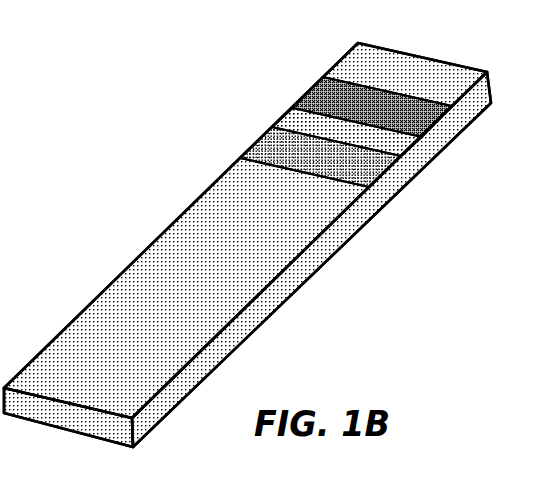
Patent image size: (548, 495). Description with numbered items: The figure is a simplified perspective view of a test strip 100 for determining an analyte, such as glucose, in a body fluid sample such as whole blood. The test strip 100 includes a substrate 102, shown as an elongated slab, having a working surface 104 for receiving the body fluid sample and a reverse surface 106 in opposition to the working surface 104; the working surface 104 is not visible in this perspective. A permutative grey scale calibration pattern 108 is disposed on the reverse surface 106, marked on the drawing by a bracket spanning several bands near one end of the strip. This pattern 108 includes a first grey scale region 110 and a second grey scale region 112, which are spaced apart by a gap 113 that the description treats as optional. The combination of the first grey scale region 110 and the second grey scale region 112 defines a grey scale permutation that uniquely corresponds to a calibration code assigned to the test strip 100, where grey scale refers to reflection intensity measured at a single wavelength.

The test strip 100 is at (407, 41).
The substrate 102 is at (107, 425).
The working surface 104 is at (298, 292).
The reverse surface 106 is at (178, 242).
The permutative grey scale calibration pattern 108 is at (323, 73).
The first grey scale region 110 is at (421, 113).
The second grey scale region 112 is at (365, 172).
The gap 113 is at (392, 148).